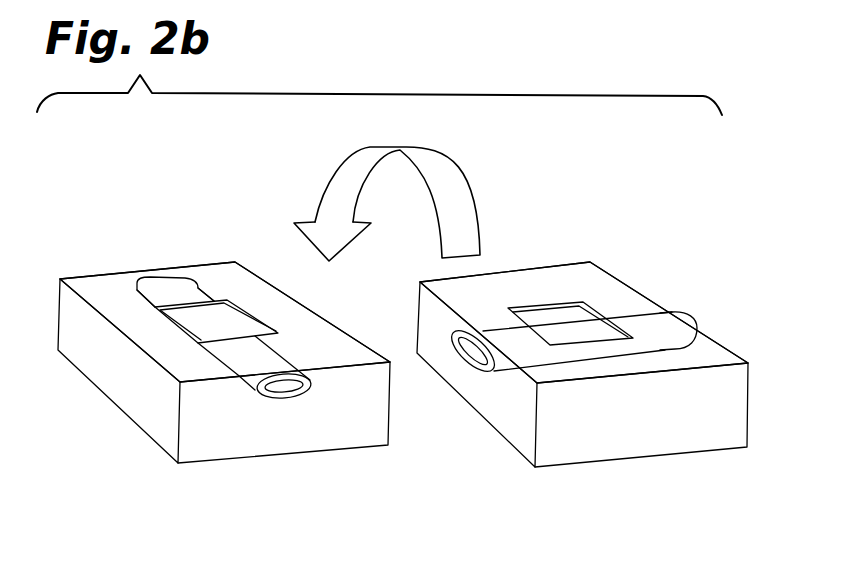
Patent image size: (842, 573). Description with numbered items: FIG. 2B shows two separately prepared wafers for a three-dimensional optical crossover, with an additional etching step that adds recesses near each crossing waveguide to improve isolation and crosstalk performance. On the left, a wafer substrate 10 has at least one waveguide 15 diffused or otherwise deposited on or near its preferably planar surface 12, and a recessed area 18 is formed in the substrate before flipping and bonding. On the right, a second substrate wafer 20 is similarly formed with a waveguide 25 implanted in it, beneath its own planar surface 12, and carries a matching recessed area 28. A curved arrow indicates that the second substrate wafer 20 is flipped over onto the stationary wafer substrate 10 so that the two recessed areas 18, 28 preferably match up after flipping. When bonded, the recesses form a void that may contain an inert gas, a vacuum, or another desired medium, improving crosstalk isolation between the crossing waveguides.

The wafer substrate 10 is at (130, 409).
The planar surface 12 is at (247, 287).
The waveguide 15 is at (165, 290).
The recessed area 18 is at (253, 327).
The second substrate wafer 20 is at (513, 427).
The waveguide 25 is at (662, 328).
The recessed area 28 is at (555, 315).